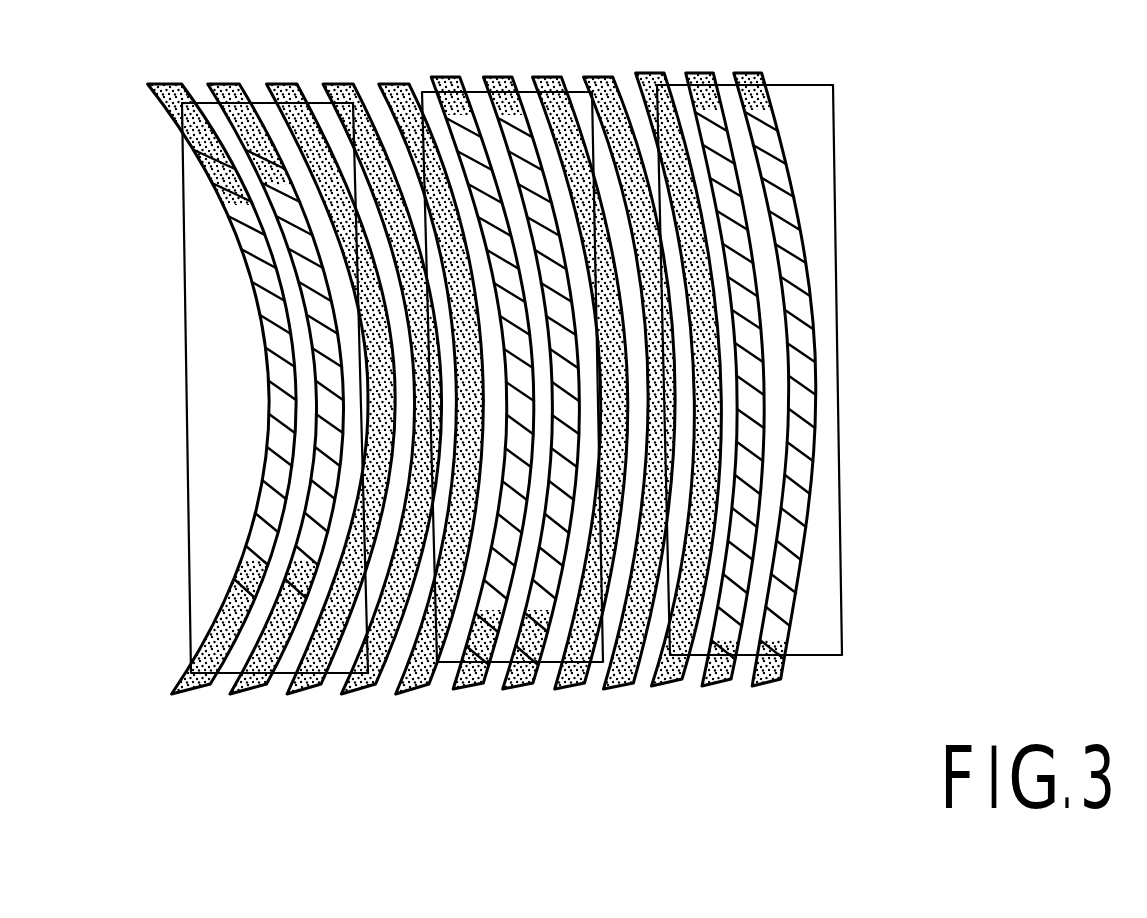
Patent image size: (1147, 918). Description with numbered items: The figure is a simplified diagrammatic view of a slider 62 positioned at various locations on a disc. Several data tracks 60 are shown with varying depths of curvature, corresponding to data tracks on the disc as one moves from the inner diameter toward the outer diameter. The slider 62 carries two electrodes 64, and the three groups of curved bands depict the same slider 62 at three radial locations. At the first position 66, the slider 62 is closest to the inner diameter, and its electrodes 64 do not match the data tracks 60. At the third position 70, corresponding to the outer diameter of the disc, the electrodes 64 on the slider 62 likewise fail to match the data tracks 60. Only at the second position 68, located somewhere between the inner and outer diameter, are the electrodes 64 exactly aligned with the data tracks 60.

The data tracks 60 is at (607, 76).
The slider 62 is at (527, 100).
The electrodes 64 is at (503, 112).
The first position 66 is at (259, 747).
The second position 68 is at (497, 740).
The third position 70 is at (747, 733).